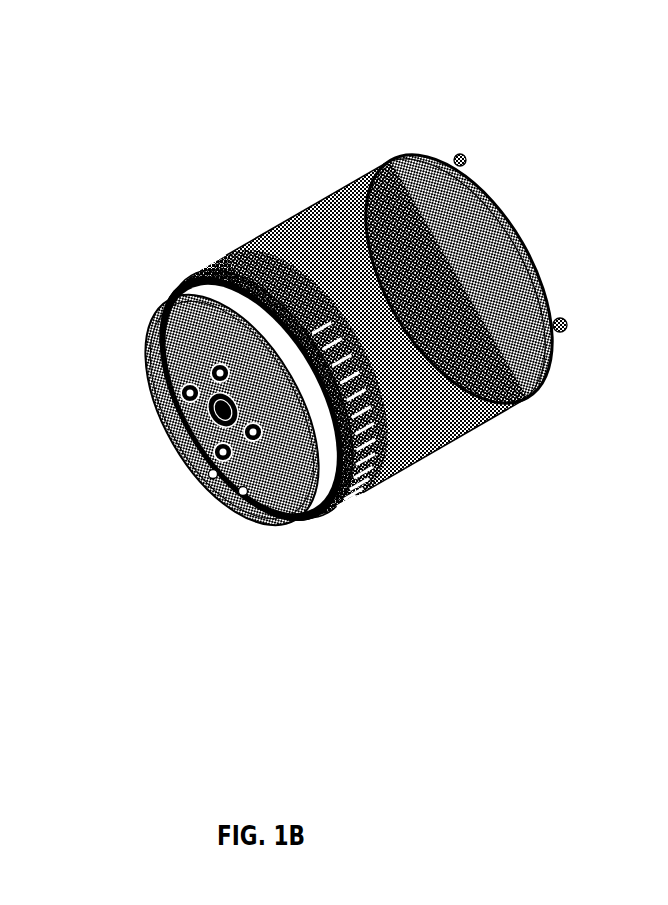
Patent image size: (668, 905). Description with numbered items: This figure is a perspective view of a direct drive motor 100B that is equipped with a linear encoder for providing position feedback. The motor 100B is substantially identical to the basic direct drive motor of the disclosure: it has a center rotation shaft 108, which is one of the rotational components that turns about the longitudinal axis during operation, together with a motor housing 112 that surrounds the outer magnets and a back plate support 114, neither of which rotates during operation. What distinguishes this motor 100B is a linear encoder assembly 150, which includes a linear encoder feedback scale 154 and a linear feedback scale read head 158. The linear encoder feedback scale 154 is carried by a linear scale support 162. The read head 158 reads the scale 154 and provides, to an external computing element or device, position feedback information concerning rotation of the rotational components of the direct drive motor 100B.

The direct drive motor 100B is at (336, 363).
The center rotation shaft 108 is at (150, 418).
The motor housing 112 is at (527, 400).
The back plate support 114 is at (518, 217).
The linear encoder assembly 150 is at (318, 525).
The linear encoder feedback scale 154 is at (265, 525).
The linear feedback scale read head 158 is at (402, 472).
The linear scale support 162 is at (230, 518).